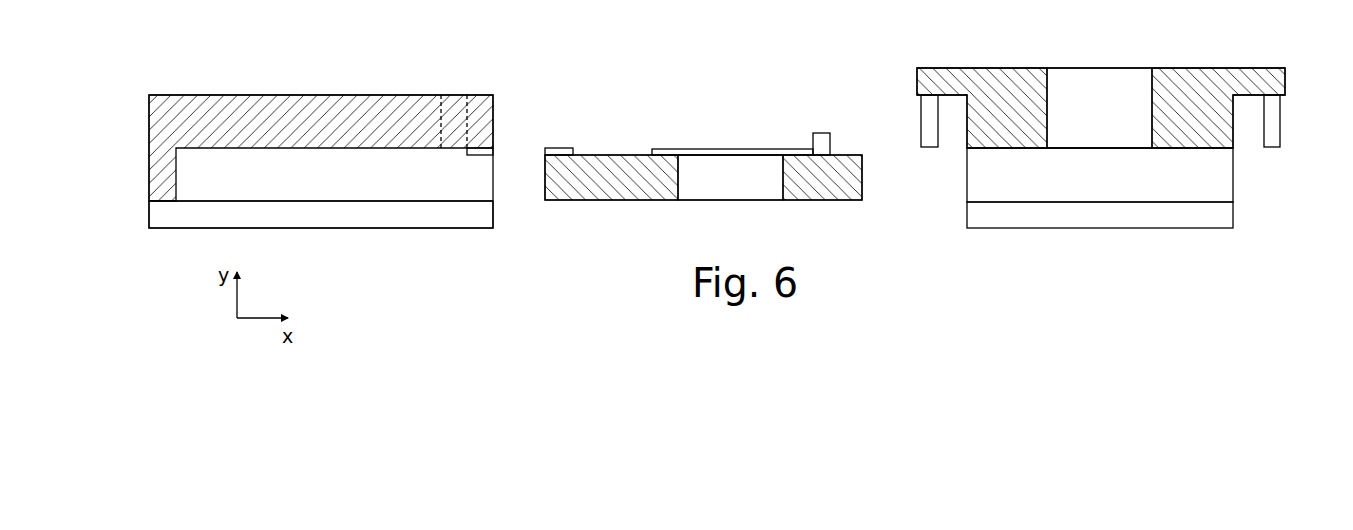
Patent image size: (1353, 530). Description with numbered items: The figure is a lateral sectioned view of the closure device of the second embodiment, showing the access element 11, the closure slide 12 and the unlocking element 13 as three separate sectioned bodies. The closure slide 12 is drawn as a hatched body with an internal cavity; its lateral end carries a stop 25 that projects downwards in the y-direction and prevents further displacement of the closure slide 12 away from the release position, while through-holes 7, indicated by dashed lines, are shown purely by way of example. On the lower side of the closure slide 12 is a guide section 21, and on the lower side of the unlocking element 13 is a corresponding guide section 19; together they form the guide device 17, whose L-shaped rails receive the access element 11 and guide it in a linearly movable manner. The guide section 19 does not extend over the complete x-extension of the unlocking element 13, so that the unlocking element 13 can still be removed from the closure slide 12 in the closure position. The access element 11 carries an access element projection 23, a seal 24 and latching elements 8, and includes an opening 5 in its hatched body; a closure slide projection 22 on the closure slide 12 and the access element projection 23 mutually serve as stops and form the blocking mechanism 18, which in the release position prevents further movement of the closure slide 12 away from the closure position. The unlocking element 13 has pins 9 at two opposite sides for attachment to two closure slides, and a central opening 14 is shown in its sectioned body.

The cavity / window 5 is at (743, 180).
The through-hole 7 is at (454, 110).
The latching element 8 is at (815, 138).
The pin 9 is at (918, 128).
The access element 11 is at (545, 168).
The closure slide 12 is at (148, 130).
The unlocking element 13 is at (917, 82).
The opening in cover 14 is at (1122, 82).
The guide device 17 is at (731, 247).
The blocking mechanism 18 is at (543, 169).
The guide section 19 is at (1187, 215).
The guide section 21 is at (405, 217).
The closure slide projection 22 is at (480, 155).
The access element projection 23 is at (560, 147).
The seal 24 is at (685, 152).
The stop 25 is at (157, 181).